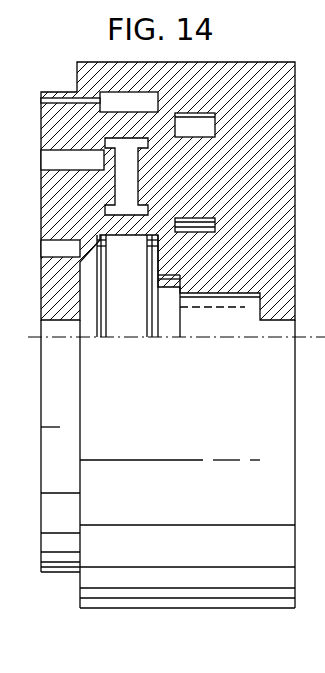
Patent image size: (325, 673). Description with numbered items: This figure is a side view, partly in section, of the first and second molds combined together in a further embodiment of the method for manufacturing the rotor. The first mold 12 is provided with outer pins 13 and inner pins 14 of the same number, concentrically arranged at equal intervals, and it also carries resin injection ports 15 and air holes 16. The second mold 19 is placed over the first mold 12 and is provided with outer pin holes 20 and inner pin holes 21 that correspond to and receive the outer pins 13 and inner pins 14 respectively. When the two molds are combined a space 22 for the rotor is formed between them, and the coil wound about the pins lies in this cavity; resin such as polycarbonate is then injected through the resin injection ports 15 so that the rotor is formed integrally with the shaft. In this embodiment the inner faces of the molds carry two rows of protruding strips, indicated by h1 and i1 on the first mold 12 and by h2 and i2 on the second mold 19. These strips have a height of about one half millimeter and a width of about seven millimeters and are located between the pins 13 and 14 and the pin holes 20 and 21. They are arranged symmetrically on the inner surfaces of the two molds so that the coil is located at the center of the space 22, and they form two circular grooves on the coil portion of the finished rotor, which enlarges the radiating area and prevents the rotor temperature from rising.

The first mold 12 is at (55, 293).
The outer pins 13 is at (166, 124).
The inner pins 14 is at (153, 226).
The resin injection ports 15 is at (52, 162).
The air holes 16 is at (42, 100).
The second mold 19 is at (93, 77).
The outer pin holes 20 is at (215, 122).
The inner pin holes 21 is at (216, 225).
The space for a rotor 22 is at (104, 211).
The protruding strip h1 is at (106, 184).
The protruding strip h2 is at (139, 189).
The protruding strip i1 is at (106, 143).
The protruding strip i2 is at (148, 143).